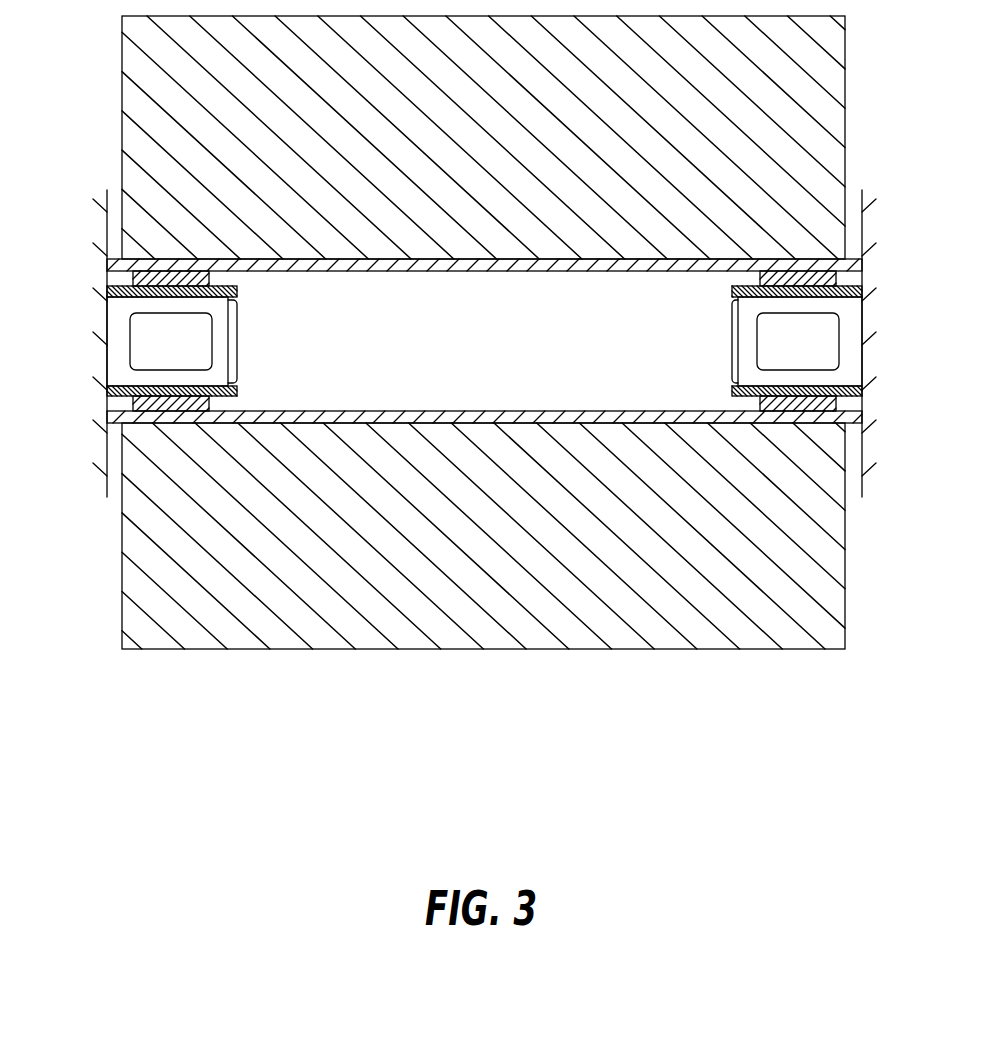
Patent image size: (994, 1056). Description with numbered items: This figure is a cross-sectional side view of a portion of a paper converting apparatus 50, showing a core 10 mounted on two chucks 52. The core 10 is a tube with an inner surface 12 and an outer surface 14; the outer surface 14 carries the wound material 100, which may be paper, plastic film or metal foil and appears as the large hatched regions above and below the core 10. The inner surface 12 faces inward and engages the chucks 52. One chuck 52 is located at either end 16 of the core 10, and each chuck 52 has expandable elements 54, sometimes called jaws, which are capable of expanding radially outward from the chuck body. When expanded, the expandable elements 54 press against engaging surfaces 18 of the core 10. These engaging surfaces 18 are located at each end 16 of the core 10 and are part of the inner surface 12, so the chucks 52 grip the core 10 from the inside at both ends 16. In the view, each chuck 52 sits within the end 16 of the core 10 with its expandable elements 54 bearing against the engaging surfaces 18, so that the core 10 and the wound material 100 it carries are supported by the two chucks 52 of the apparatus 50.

The core 10 is at (403, 259).
The inner surface 12 is at (409, 412).
The outer surface 14 is at (522, 424).
The end 16 is at (108, 267).
The engaging surfaces 18 is at (143, 410).
The paper converting apparatus 50 is at (265, 673).
The chucks 52 is at (240, 339).
The expandable elements 54 is at (180, 272).
The wound material 100 is at (682, 650).